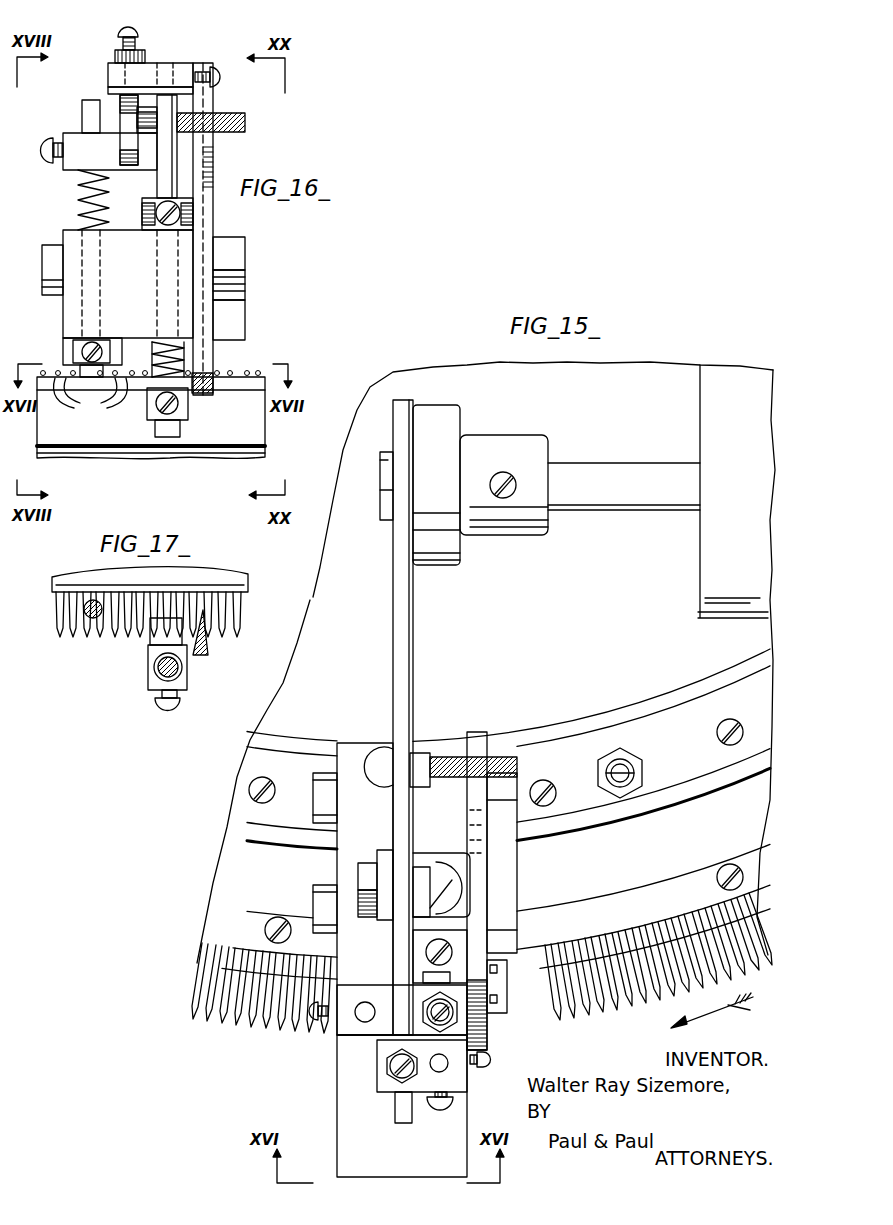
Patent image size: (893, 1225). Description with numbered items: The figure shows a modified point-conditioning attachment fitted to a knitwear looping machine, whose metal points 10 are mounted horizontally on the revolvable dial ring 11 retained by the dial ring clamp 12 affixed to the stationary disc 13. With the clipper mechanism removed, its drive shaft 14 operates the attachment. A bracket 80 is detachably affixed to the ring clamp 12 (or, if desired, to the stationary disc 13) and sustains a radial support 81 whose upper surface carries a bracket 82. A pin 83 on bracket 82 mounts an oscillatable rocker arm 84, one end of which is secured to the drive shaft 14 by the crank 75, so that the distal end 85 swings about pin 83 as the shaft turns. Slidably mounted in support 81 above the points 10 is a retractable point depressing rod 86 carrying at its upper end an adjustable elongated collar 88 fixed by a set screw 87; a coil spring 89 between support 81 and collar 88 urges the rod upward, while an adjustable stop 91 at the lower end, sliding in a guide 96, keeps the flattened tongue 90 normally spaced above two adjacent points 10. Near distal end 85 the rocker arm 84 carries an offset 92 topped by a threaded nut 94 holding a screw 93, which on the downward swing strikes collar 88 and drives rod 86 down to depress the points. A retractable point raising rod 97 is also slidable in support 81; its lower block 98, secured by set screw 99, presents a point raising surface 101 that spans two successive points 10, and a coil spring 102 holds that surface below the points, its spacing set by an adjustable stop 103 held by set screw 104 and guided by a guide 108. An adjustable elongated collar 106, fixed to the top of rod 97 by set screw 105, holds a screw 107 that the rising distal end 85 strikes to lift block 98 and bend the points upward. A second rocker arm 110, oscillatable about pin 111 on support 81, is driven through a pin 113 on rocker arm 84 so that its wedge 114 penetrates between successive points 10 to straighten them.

In FIG. 16, the metal points 10 is at (151, 415).
In FIG. 17, the metal points 10 is at (62, 638).
In FIG. 15, the metal points 10 is at (196, 1022).
In FIG. 15, the dial ring 11 is at (501, 900).
In FIG. 15, the dial ring clamp 12 is at (508, 749).
In FIG. 15, the stationary disc 13 is at (601, 631).
In FIG. 15, the drive shaft 14 is at (637, 430).
In FIG. 15, the crank 75 is at (384, 500).
In FIG. 16, the bracket 80 is at (230, 327).
In FIG. 15, the bracket 80 is at (557, 778).
In FIG. 16, the radial support 81 is at (72, 240).
In FIG. 15, the radial support 81 is at (354, 762).
In FIG. 15, the bracket 82 is at (430, 856).
In FIG. 15, the pin 83 is at (364, 880).
In FIG. 15, the rocker arm 84 is at (413, 656).
In FIG. 16, the distal end 85 is at (128, 148).
In FIG. 15, the distal end 85 is at (400, 1123).
In FIG. 16, the point depressing rod 86 is at (81, 110).
In FIG. 17, the point depressing rod 86 is at (83, 612).
In FIG. 15, the point depressing rod 86 is at (366, 1002).
In FIG. 16, the set screw 87 is at (42, 150).
In FIG. 15, the set screw 87 is at (323, 1023).
In FIG. 16, the adjustable elongated collar 88 is at (73, 140).
In FIG. 15, the adjustable elongated collar 88 is at (348, 985).
In FIG. 16, the coil spring 89 is at (80, 193).
In FIG. 16, the tongue 90 is at (90, 378).
In FIG. 16, the adjustable stop 91 is at (105, 347).
In FIG. 15, the offset 92 is at (413, 1003).
In FIG. 15, the screw 93 is at (463, 1023).
In FIG. 15, the threaded nut 94 is at (505, 950).
In FIG. 16, the guide 96 is at (67, 353).
In FIG. 16, the point raising rod 97 is at (168, 153).
In FIG. 17, the point raising rod 97 is at (158, 670).
In FIG. 15, the point raising rod 97 is at (447, 1067).
In FIG. 16, the point raising block 98 is at (188, 405).
In FIG. 17, the point raising block 98 is at (157, 683).
In FIG. 16, the set screw 99 is at (178, 415).
In FIG. 17, the set screw 99 is at (168, 713).
In FIG. 17, the point raising surface 101 is at (157, 625).
In FIG. 16, the coil spring 102 is at (152, 352).
In FIG. 17, the coil spring 102 is at (187, 662).
In FIG. 16, the adjustable stop 103 is at (140, 266).
In FIG. 16, the set screw 104 is at (170, 232).
In FIG. 15, the set screw 104 is at (441, 1113).
In FIG. 16, the set screw 105 is at (217, 72).
In FIG. 15, the set screw 105 is at (492, 1060).
In FIG. 16, the adjustable elongated collar 106 is at (150, 70).
In FIG. 15, the adjustable elongated collar 106 is at (385, 1092).
In FIG. 16, the screw 107 is at (126, 32).
In FIG. 15, the screw 107 is at (387, 1066).
In FIG. 16, the guide 108 is at (152, 220).
In FIG. 15, the guide 108 is at (425, 950).
In FIG. 16, the second rocker arm 110 is at (213, 207).
In FIG. 15, the second rocker arm 110 is at (480, 866).
In FIG. 16, the pin 111 is at (222, 256).
In FIG. 15, the pin 111 is at (510, 1000).
In FIG. 16, the pin 113 is at (233, 118).
In FIG. 15, the pin 113 is at (447, 757).
In FIG. 16, the wedge 114 is at (212, 373).
In FIG. 17, the wedge 114 is at (208, 650).